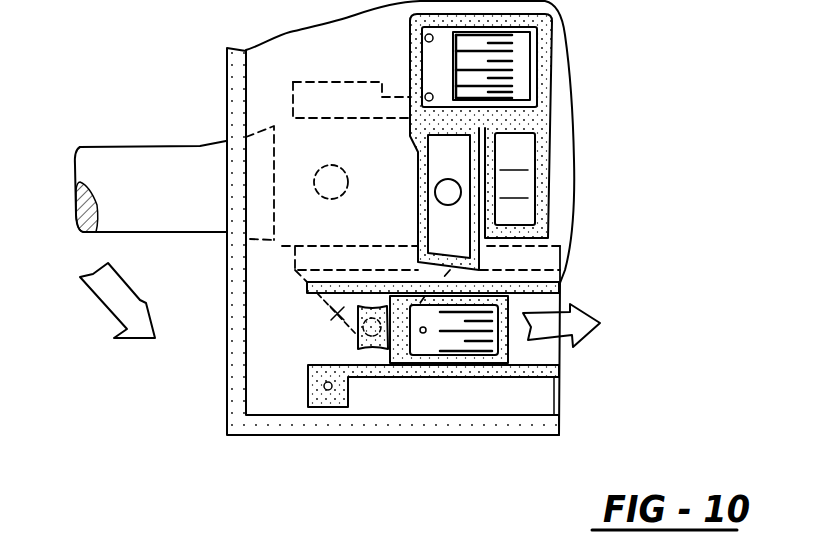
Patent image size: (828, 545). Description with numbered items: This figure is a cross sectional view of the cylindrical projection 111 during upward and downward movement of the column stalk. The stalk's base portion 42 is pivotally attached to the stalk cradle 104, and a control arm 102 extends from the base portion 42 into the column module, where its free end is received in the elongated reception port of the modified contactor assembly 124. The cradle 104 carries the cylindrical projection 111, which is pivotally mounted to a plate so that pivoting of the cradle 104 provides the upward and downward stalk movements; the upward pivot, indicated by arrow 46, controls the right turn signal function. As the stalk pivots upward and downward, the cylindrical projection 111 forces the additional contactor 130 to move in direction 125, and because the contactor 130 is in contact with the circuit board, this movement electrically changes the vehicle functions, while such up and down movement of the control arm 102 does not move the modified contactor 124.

The base portion 42 is at (152, 158).
The arrow 46 is at (101, 313).
The control arm 102 is at (450, 192).
The stalk cradle 104 is at (338, 314).
The cylindrical projection 111 is at (373, 330).
The modified contactor assembly 124 is at (535, 116).
The direction 125 is at (597, 318).
The additional contactor 130 is at (515, 364).